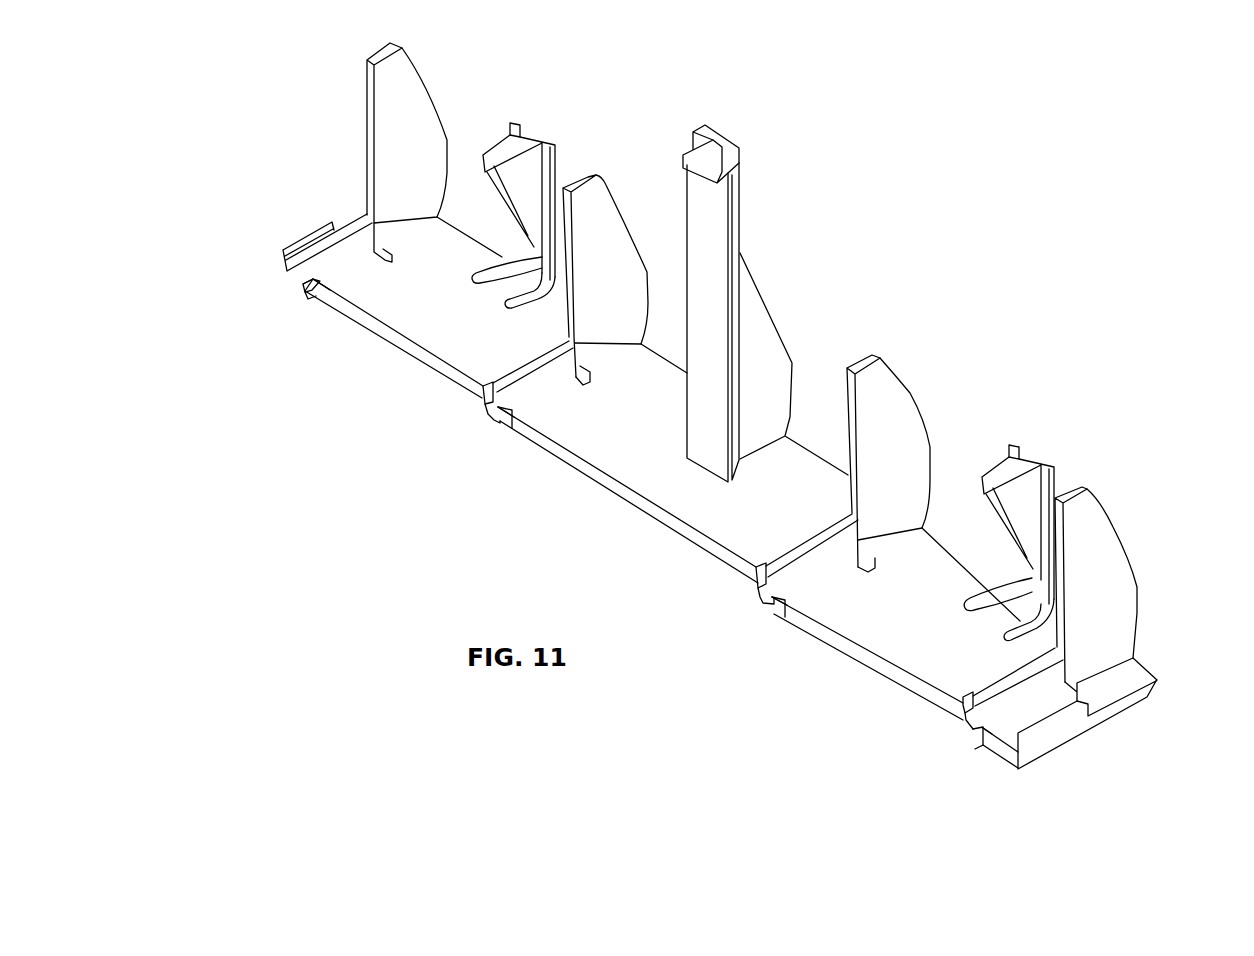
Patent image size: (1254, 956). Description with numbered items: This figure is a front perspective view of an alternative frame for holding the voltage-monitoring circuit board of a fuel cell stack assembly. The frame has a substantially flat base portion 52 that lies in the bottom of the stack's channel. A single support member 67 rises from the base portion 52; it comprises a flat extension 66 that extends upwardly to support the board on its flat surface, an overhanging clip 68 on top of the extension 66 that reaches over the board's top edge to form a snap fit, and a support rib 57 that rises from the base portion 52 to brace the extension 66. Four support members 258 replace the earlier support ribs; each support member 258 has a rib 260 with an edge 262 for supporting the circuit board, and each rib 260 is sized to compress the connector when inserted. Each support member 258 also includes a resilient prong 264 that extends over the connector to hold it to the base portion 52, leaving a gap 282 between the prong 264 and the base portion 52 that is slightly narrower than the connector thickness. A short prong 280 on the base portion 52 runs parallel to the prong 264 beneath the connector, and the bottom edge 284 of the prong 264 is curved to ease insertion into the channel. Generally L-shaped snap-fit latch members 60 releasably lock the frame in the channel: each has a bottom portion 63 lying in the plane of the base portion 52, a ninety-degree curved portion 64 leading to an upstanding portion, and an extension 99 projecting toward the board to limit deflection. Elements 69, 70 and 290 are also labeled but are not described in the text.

The base portion 52 is at (602, 523).
The support rib 57 is at (773, 342).
The snap-fit latch member 60 is at (789, 351).
The bottom portion 63 is at (502, 292).
The curved portion 64 is at (523, 267).
The flat extension 66 is at (778, 292).
The support member 67 is at (747, 254).
The overhanging clip 68 is at (765, 142).
The head portion 69 is at (718, 180).
The rail 70 is at (300, 238).
The extension 99 is at (513, 128).
The support member 258 is at (731, 440).
The rib 260 is at (400, 140).
The edge 262 is at (368, 97).
The prong 264 is at (310, 277).
The short prong 280 is at (323, 294).
The gap 282 is at (312, 285).
The bottom edge 284 is at (318, 289).
The end slab 290 is at (1147, 698).